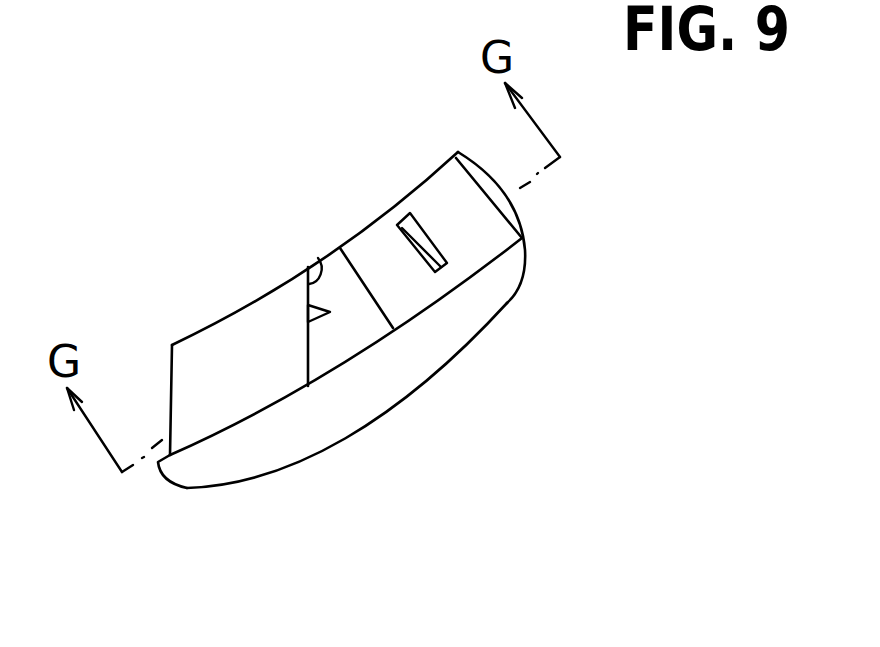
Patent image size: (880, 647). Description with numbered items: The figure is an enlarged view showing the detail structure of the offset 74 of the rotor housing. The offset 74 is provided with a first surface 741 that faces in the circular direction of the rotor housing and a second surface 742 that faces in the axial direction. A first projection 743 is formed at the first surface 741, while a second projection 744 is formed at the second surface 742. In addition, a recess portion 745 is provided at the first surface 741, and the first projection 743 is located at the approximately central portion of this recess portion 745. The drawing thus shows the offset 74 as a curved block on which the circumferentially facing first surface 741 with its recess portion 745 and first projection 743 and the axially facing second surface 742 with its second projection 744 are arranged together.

The offset 74 is at (207, 330).
The first surface 741 is at (507, 215).
The second surface 742 is at (318, 258).
The first projection 743 is at (433, 273).
The second projection 744 is at (314, 318).
The recess portion 745 is at (475, 253).